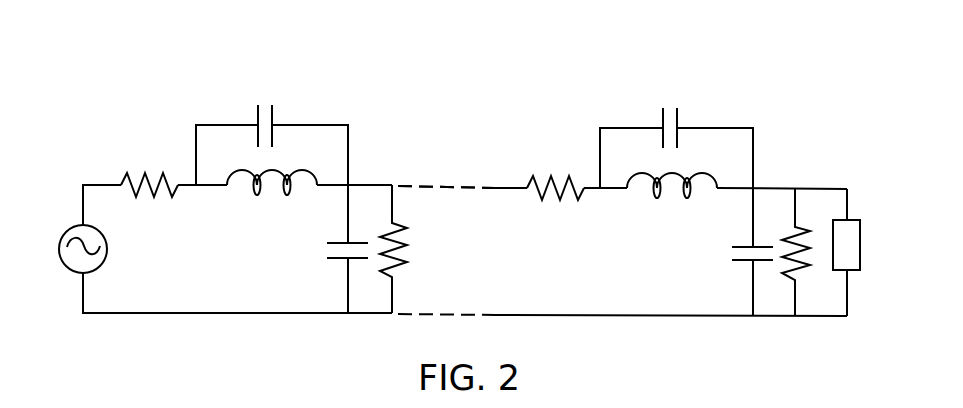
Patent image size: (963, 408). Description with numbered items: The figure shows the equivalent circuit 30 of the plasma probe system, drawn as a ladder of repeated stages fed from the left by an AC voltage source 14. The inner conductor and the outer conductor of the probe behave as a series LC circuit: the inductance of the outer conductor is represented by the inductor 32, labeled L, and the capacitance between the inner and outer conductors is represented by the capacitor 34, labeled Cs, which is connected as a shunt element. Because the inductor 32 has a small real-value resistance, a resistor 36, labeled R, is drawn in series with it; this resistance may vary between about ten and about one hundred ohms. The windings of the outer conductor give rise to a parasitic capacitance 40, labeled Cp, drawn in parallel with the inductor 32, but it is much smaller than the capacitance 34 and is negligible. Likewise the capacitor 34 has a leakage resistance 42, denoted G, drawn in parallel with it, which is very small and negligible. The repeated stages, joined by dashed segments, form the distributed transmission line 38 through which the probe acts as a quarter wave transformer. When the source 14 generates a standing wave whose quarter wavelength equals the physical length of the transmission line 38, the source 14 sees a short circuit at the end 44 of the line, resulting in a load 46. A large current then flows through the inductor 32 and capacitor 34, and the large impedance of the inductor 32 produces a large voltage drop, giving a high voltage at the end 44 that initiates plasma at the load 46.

The equivalent circuit 30 is at (763, 58).
The AC voltage source 14 is at (63, 264).
The resistor 36 is at (127, 158).
The inductor 32 is at (240, 207).
The parasitic capacitance 40 is at (258, 93).
The capacitor 34 is at (333, 265).
The leakage resistance 42 is at (412, 240).
The distributed transmission line 38 is at (463, 185).
The end of the transmission line 44 is at (847, 202).
The load 46 is at (860, 242).